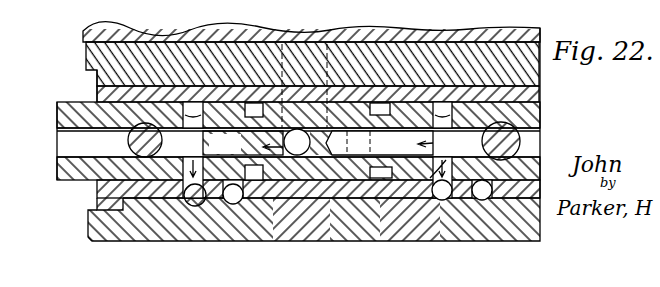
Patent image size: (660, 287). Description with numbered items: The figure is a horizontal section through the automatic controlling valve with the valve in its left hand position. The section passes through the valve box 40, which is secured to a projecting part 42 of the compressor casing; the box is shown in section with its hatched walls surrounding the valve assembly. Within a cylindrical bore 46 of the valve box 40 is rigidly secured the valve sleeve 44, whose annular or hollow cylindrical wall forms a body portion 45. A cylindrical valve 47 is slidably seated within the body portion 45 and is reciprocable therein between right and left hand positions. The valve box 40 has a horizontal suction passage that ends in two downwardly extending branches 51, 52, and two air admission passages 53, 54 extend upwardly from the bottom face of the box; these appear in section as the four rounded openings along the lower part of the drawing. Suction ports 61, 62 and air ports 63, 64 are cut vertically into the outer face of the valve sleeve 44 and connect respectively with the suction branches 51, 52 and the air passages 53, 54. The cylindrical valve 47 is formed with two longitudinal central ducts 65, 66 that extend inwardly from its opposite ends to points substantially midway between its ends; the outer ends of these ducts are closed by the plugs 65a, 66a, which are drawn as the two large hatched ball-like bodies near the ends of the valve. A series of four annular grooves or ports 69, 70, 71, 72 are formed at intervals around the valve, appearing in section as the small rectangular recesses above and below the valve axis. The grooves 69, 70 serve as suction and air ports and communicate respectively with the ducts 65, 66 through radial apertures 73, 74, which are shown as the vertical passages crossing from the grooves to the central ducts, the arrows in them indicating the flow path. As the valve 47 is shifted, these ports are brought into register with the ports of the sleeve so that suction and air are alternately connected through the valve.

The valve box 40 is at (86, 49).
The projecting part 42 is at (157, 32).
The valve sleeve 44 is at (97, 82).
The body portion 45 is at (540, 110).
The cylindrical bore 46 is at (513, 82).
The cylindrical valve 47 is at (75, 170).
The suction passage branch 51 is at (192, 206).
The suction passage branch 52 is at (482, 203).
The air admission passage 53 is at (236, 204).
The air admission passage 54 is at (442, 213).
The suction port 61 is at (175, 185).
The suction port 62 is at (540, 180).
The air port 63 is at (275, 200).
The air port 64 is at (432, 196).
The longitudinal central duct 65 is at (267, 142).
The plug 65a is at (128, 138).
The longitudinal central duct 66 is at (379, 143).
The plug 66a is at (522, 138).
The annular groove or port 69 is at (198, 102).
The annular groove or port 70 is at (445, 102).
The annular groove or port 71 is at (256, 103).
The annular groove or port 72 is at (380, 103).
The radial aperture 73 is at (185, 169).
The radial aperture 74 is at (449, 169).